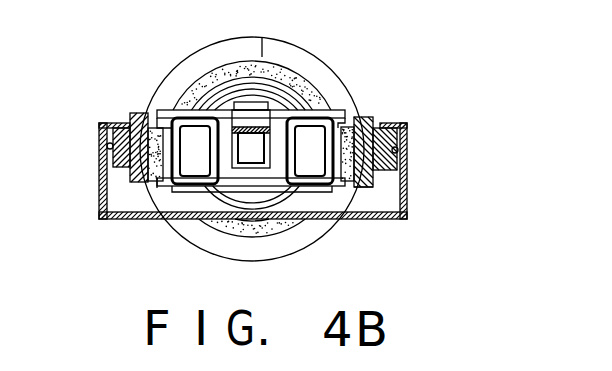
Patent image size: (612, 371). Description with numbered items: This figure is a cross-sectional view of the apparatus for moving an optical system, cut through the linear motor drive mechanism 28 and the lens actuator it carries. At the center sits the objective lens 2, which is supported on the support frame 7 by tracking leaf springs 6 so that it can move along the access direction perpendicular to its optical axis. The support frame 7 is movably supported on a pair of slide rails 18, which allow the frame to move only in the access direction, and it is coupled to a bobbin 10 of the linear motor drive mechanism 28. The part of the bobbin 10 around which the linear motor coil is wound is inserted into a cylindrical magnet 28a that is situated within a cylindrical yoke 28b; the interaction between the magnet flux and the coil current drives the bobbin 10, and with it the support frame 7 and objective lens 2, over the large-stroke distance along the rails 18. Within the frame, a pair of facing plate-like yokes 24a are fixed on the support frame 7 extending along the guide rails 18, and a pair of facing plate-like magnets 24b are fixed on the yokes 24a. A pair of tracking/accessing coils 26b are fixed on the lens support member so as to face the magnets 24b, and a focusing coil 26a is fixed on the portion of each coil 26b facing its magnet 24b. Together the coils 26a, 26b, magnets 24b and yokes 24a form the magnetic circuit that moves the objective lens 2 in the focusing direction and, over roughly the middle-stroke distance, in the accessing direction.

The objective lens 2 is at (272, 113).
The tracking leaf spring 6 is at (158, 111).
The support frame 7 is at (246, 172).
The bobbin 10 is at (282, 100).
The slide rails 18 is at (407, 162).
The plate-like yokes 24a is at (358, 183).
The plate-like magnets 24b is at (363, 118).
The focusing coil 26a is at (350, 190).
The tracking/accessing coils 26b is at (312, 182).
The linear motor drive mechanism 28 is at (187, 239).
The cylindrical magnet 28a is at (191, 65).
The cylindrical yoke 28b is at (253, 60).